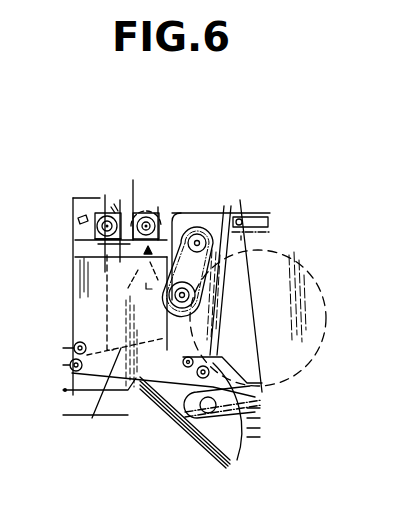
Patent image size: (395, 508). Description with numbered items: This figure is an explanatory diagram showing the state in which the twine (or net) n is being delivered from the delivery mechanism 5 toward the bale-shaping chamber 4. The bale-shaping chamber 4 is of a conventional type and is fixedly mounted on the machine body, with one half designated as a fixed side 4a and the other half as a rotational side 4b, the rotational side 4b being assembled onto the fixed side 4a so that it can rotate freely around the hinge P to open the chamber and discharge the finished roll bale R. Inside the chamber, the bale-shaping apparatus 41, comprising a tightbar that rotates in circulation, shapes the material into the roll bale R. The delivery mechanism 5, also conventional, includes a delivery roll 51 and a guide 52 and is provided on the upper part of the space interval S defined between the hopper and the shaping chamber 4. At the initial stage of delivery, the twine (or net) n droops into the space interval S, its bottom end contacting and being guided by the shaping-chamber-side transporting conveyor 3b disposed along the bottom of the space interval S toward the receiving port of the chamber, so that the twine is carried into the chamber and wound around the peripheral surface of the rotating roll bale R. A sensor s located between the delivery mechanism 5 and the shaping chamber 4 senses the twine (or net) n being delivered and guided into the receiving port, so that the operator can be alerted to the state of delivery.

The bale-shaping chamber 4 is at (298, 146).
The fixed side 4a is at (215, 220).
The rotational side 4b is at (268, 217).
The delivery mechanism 5 is at (152, 200).
The delivery roll 51 is at (100, 213).
The guide 52 is at (100, 250).
The sensor s is at (128, 250).
The twine (or net) n is at (107, 293).
The space interval S is at (88, 315).
The hinge P is at (242, 236).
The roll bale R is at (305, 262).
The shaping-chamber-side transporting conveyor 3b is at (92, 418).
The bale-shaping apparatus 41 is at (252, 390).